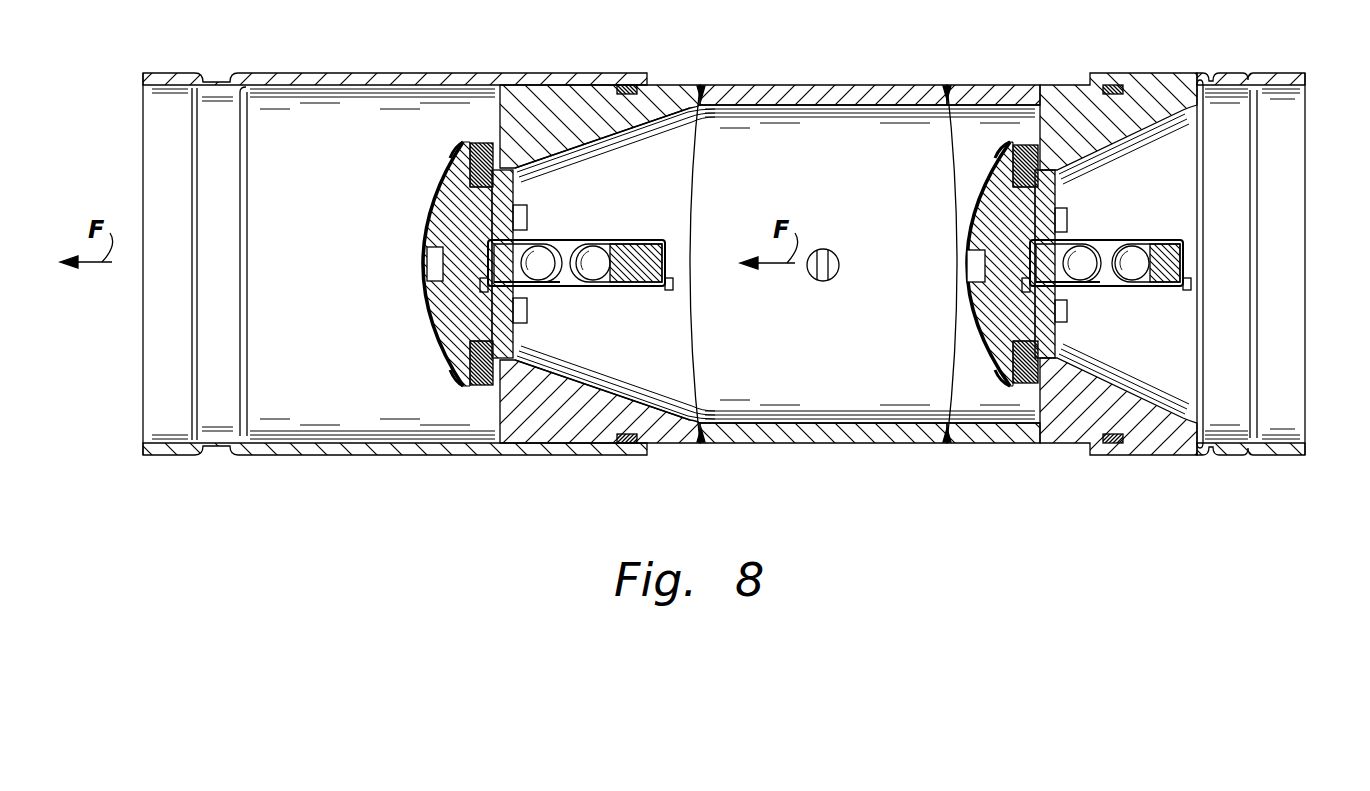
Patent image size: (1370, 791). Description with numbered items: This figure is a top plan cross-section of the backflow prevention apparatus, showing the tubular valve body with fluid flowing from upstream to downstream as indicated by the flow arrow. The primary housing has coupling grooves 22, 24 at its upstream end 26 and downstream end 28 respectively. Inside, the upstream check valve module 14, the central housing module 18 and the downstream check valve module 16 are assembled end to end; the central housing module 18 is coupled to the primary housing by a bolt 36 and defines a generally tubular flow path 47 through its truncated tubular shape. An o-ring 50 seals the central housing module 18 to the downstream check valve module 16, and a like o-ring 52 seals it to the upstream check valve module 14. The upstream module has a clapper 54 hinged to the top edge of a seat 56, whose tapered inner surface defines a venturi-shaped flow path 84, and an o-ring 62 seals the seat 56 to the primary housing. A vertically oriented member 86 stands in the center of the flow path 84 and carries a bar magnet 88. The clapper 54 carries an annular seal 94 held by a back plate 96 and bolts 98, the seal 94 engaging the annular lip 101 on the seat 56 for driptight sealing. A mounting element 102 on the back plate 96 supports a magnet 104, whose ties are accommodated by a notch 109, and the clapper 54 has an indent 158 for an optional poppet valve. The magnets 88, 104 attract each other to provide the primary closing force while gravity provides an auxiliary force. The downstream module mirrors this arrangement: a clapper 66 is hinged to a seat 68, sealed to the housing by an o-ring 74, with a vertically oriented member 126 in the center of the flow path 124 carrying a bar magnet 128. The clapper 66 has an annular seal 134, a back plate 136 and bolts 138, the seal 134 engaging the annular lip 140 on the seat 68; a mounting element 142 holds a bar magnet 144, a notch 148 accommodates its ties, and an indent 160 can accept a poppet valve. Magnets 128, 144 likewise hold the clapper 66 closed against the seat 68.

The upstream check valve module 14 is at (1013, 436).
The downstream check valve module 16 is at (580, 106).
The central housing module 18 is at (851, 436).
The coupling groove 22 is at (1233, 128).
The coupling groove 24 is at (218, 330).
The upstream end 26 is at (1306, 146).
The downstream end 28 is at (168, 366).
The bolt 36 is at (821, 274).
The tubular flow path 47 is at (777, 112).
The o-ring 50 is at (700, 88).
The o-ring 52 is at (946, 92).
The clapper 54 is at (988, 197).
The seat 56 is at (1068, 422).
The o-ring 62 is at (1112, 88).
The clapper 66 is at (458, 210).
The seat 68 is at (619, 118).
The o-ring 74 is at (628, 86).
The venturi-shaped flow path 84 is at (1178, 374).
The vertically oriented member 86 is at (1167, 262).
The bar magnet 88 is at (1137, 252).
The annular seal 94 is at (1027, 146).
The back plate 96 is at (1110, 168).
The bolts 98 is at (1067, 212).
The annular lip 101 is at (1000, 158).
The mounting element 102 is at (1067, 240).
The magnet 104 is at (1092, 290).
The notch 109 is at (1003, 236).
The flow path 124 is at (607, 375).
The vertically oriented member 126 is at (647, 256).
The bar magnet 128 is at (594, 252).
The annular seal 134 is at (460, 145).
The back plate 136 is at (513, 340).
The bolts 138 is at (523, 212).
The annular lip 140 is at (466, 152).
The mounting element 142 is at (520, 234).
The bar magnet 144 is at (557, 285).
The notch 148 is at (443, 226).
The indent 158 is at (975, 274).
The indent 160 is at (434, 268).